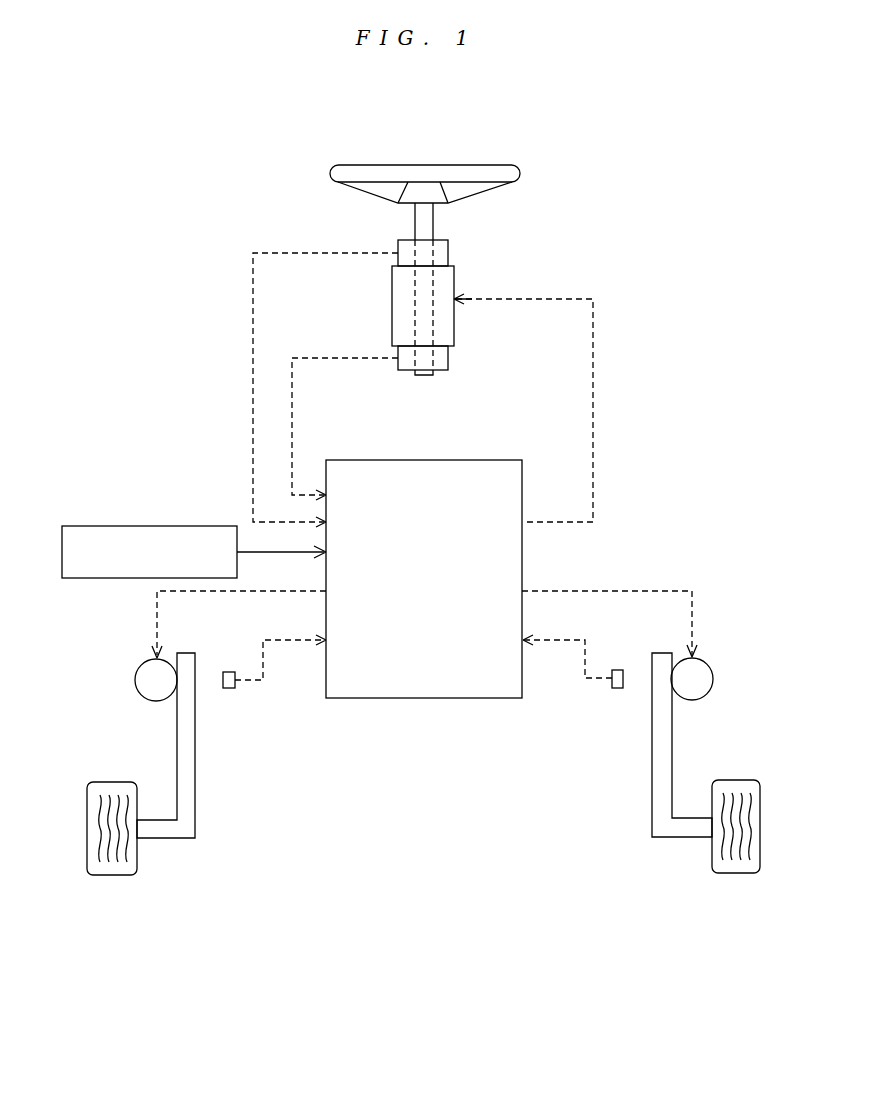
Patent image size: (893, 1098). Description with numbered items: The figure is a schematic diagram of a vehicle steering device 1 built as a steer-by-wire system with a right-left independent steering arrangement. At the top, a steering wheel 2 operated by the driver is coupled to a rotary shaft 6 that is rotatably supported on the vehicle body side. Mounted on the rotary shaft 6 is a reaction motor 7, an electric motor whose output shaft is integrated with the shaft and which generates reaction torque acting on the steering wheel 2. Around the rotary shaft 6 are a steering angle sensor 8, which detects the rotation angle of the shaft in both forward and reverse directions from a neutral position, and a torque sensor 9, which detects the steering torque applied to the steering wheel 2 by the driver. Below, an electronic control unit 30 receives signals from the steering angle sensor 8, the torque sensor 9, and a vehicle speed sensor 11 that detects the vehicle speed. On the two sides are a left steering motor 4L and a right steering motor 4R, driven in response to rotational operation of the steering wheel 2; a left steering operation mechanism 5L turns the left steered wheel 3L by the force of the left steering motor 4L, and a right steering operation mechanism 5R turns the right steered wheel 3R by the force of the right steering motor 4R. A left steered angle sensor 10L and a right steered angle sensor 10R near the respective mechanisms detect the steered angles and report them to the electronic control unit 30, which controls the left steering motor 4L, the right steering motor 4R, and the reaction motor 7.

The vehicle steering device 1 is at (622, 203).
The steering wheel 2 is at (520, 172).
The rotary shaft 6 is at (427, 228).
The reaction motor 7 is at (447, 283).
The steering angle sensor 8 is at (440, 255).
The torque sensor 9 is at (440, 360).
The electronic control unit (ECU) 30 is at (434, 460).
The vehicle speed sensor 11 is at (116, 526).
The right steering motor 4R is at (134, 675).
The left steering motor 4L is at (713, 673).
The right steering operation mechanism 5R is at (177, 738).
The left steering operation mechanism 5L is at (672, 740).
The right steered wheel 3R is at (111, 875).
The left steered wheel 3L is at (735, 873).
The right steered angle sensor 10R is at (230, 672).
The left steered angle sensor 10L is at (618, 670).